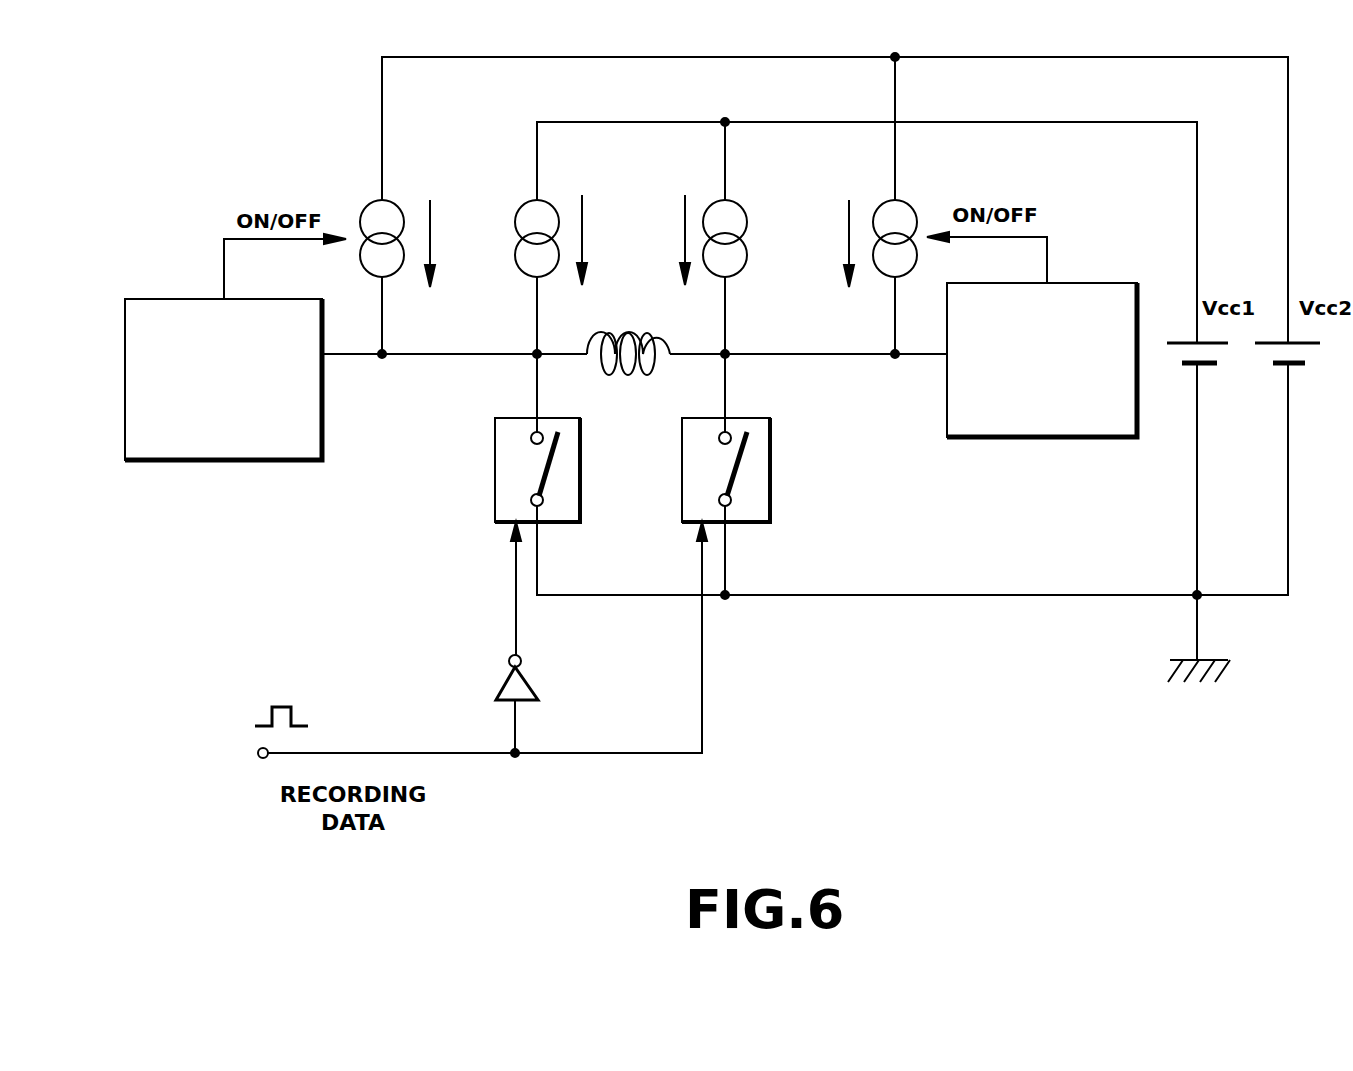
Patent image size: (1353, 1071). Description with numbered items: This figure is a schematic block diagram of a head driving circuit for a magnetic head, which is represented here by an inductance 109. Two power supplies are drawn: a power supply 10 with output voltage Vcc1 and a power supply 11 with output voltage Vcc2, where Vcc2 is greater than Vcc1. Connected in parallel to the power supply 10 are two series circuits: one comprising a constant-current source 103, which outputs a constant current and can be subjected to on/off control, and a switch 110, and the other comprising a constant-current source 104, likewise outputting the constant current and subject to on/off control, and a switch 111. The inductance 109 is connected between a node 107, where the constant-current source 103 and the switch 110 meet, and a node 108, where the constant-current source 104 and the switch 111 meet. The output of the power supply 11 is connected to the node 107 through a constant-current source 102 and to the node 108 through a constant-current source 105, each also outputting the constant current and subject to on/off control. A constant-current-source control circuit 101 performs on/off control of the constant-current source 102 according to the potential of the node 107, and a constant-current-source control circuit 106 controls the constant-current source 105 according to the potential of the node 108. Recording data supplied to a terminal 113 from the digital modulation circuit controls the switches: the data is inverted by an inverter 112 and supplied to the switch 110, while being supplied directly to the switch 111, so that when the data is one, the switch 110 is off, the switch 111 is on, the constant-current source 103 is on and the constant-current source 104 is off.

The power supply 10 is at (1173, 359).
The power supply 11 is at (1313, 358).
The constant-current-source control circuit 101 is at (220, 460).
The constant-current source 102 is at (377, 203).
The constant-current source 103 is at (528, 203).
The constant-current source 104 is at (737, 215).
The constant-current source 105 is at (905, 205).
The constant-current-source control circuit 106 is at (1028, 437).
The node 107 is at (535, 357).
The node 108 is at (727, 357).
The inductance 109 is at (630, 376).
The switch 110 is at (495, 503).
The switch 111 is at (770, 478).
The inverter 112 is at (530, 682).
The terminal 113 is at (259, 758).